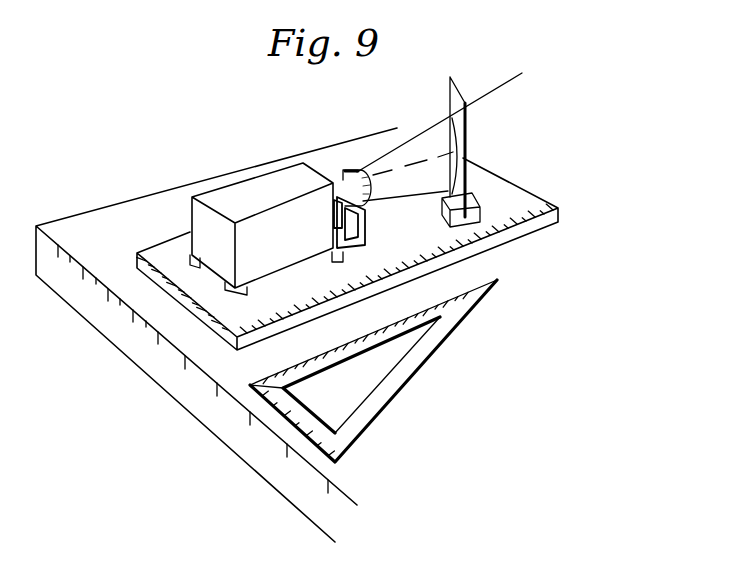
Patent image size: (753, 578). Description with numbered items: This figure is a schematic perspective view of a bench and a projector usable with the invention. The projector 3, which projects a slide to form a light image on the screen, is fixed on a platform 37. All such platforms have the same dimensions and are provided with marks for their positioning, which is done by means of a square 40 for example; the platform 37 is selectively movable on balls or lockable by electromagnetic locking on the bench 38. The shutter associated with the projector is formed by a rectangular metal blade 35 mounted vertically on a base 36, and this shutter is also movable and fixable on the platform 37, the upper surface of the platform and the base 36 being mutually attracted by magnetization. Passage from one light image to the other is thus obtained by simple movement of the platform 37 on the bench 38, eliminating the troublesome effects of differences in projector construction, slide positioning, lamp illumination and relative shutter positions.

The projector 3 is at (257, 183).
The rectangular metal blade 35 is at (462, 122).
The base 36 is at (468, 216).
The platform 37 is at (376, 225).
The bench 38 is at (216, 335).
The square 40 is at (397, 376).